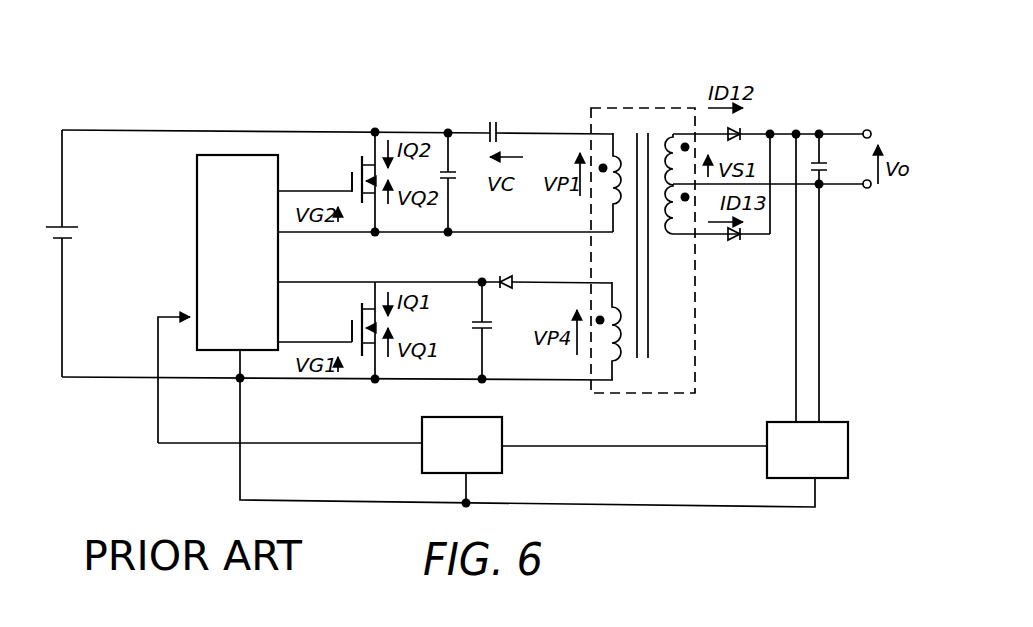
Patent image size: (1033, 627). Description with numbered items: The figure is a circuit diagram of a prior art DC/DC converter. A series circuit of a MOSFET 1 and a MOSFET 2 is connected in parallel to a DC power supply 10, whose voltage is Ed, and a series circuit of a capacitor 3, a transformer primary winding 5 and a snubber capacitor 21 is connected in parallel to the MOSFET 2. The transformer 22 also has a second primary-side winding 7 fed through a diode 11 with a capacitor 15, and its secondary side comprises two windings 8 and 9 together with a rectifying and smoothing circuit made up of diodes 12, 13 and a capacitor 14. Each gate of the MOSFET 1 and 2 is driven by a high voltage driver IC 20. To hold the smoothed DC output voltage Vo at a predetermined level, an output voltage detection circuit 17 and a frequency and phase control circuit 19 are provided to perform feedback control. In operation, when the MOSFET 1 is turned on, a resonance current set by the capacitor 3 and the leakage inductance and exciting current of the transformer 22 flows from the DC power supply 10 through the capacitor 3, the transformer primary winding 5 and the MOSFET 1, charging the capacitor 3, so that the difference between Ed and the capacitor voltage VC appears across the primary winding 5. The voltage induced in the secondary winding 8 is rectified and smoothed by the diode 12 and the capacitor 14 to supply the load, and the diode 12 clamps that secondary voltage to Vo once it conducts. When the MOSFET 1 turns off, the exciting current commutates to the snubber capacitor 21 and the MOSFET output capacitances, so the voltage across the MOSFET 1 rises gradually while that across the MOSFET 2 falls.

The MOSFET 1 is at (346, 319).
The MOSFET 2 is at (345, 172).
The capacitor 3 is at (491, 120).
The transformer primary winding 5 is at (617, 198).
The second primary winding of transformer 7 is at (606, 350).
The transformer secondary winding 8 is at (675, 133).
The transformer secondary winding 9 is at (676, 236).
The DC power supply 10 is at (77, 236).
The diode 11 is at (505, 276).
The diode 12 is at (738, 124).
The diode 13 is at (737, 241).
The capacitor 14 is at (832, 160).
The capacitor 15 is at (488, 330).
The output voltage detection circuit 17 is at (850, 439).
The frequency and phase control circuit 19 is at (422, 432).
The high voltage driver IC 20 is at (197, 248).
The snubber capacitor 21 is at (453, 182).
The transformer 22 is at (612, 108).